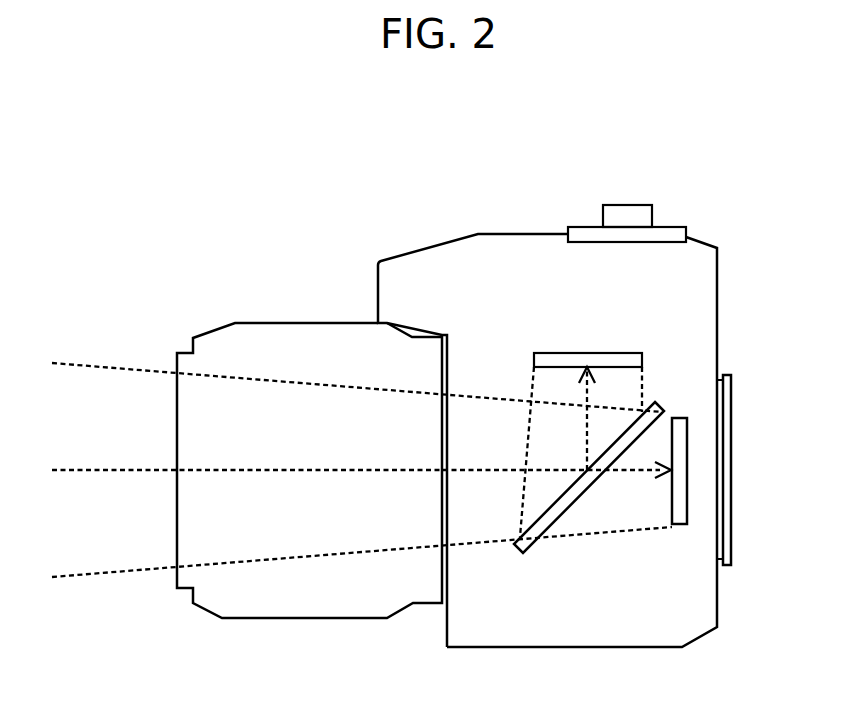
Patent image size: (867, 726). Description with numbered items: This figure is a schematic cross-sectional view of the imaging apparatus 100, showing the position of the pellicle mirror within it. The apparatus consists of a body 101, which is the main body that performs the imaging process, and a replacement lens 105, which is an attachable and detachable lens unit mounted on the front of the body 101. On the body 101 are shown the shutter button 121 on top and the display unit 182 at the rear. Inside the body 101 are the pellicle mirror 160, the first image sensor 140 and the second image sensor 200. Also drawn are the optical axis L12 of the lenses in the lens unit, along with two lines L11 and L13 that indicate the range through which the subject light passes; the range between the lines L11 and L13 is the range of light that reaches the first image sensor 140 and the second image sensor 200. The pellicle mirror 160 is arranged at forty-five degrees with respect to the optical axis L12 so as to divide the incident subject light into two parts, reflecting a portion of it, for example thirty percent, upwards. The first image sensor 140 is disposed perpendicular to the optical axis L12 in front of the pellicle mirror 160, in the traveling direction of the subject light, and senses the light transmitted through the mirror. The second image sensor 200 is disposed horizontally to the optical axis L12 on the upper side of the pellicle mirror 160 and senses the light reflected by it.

The imaging apparatus 100 is at (552, 134).
The body 101 is at (403, 264).
The replacement lens 105 is at (292, 328).
The shutter button 121 is at (648, 210).
The second image sensor 200 is at (563, 356).
The pellicle mirror 160 is at (517, 550).
The first image sensor 140 is at (682, 519).
The display unit 182 is at (728, 423).
The line L11 is at (52, 363).
The optical axis L12 is at (52, 470).
The line L13 is at (52, 577).